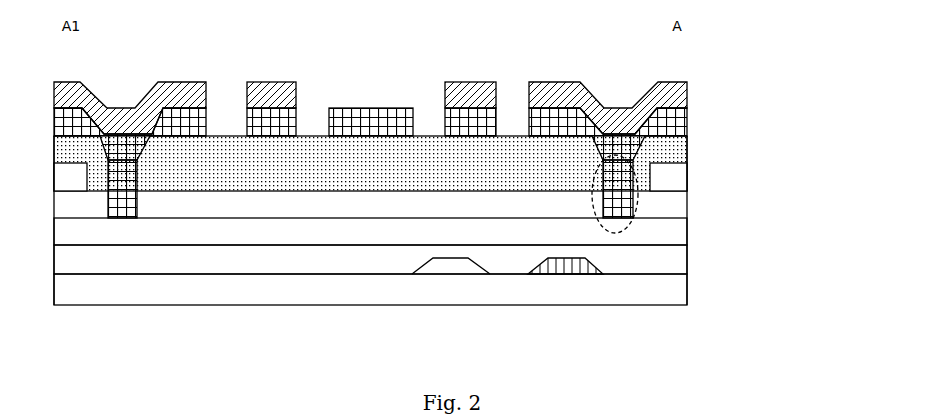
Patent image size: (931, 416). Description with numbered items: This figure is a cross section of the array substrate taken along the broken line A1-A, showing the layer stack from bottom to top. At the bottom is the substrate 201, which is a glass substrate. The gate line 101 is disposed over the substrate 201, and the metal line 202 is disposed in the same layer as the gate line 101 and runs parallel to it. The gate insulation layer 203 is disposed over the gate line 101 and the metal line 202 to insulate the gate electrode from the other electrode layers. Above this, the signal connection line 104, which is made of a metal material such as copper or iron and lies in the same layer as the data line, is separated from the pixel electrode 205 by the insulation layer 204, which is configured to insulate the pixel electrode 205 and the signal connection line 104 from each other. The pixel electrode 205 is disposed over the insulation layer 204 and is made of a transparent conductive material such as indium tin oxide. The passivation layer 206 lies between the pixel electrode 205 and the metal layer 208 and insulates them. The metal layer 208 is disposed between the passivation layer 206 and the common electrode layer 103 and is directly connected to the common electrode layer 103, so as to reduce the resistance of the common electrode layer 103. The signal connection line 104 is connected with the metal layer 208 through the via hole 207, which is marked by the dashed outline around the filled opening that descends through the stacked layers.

The gate line 101 is at (563, 263).
The common electrode layer 103 is at (687, 95).
The signal connection line 104 is at (632, 242).
The substrate 201 is at (335, 285).
The metal line 202 is at (460, 263).
The gate insulation layer 203 is at (637, 265).
The insulation layer 204 is at (638, 210).
The pixel electrode 205 is at (670, 175).
The passivation layer 206 is at (660, 152).
The via hole 207 is at (617, 233).
The metal layer 208 is at (668, 122).